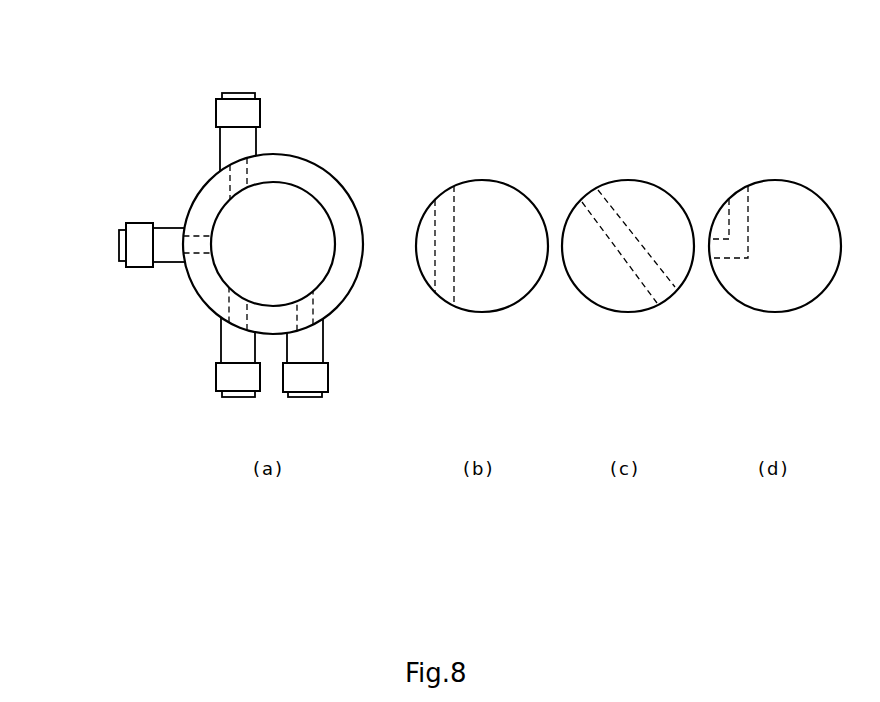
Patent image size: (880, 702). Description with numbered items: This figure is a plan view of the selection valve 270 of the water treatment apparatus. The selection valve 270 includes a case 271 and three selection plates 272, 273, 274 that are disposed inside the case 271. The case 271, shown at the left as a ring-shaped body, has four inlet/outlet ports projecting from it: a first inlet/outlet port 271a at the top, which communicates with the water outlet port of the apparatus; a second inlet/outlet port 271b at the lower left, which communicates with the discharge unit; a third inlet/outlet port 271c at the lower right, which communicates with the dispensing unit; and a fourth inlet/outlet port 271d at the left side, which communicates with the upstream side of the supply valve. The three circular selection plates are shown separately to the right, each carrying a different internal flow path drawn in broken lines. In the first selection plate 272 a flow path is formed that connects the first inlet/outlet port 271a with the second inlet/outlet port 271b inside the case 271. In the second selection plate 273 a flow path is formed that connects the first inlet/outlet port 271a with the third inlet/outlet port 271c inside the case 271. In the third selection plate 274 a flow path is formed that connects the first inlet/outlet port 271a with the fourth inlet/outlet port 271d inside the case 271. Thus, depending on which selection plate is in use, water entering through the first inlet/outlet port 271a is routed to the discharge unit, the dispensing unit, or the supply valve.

The selection valve 270 is at (173, 313).
The case 271 is at (302, 170).
The first inlet/outlet port 271a is at (238, 92).
The second inlet/outlet port 271b is at (218, 396).
The third inlet/outlet port 271c is at (322, 396).
The fourth inlet/outlet port 271d is at (118, 243).
The first selection plate 272 is at (494, 190).
The second selection plate 273 is at (642, 190).
The third selection plate 274 is at (787, 190).